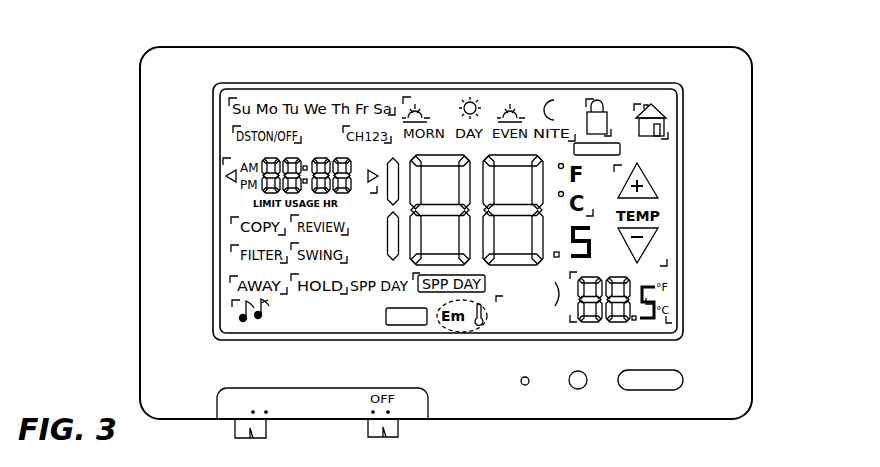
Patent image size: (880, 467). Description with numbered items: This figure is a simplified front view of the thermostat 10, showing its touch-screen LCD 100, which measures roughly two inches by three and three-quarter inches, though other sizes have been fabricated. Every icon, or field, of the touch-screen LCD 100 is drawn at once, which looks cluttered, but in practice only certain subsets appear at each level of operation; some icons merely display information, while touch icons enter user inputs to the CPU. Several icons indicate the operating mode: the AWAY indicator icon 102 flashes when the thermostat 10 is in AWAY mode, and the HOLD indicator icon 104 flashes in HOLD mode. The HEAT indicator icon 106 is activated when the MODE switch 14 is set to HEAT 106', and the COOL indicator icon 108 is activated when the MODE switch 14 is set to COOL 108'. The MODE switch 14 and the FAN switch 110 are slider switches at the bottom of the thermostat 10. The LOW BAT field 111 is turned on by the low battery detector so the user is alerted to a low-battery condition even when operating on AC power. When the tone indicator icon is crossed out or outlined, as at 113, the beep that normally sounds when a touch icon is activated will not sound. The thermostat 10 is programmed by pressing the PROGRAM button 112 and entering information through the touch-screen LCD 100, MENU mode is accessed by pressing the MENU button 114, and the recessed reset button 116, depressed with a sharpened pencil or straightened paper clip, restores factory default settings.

The thermostat 10 is at (676, 33).
The touch-screen LCD 100 is at (610, 98).
The LOW BAT field 111 is at (620, 149).
The crossed-out or outlined tone indicator icon 113 is at (262, 320).
The HOLD indicator icon 104 is at (362, 332).
The AWAY indicator icon 102 is at (400, 330).
The HEAT indicator icon 106 is at (518, 331).
The COOL indicator icon 108 is at (532, 343).
The FAN switch 110 is at (235, 432).
The HEAT setting 106' is at (329, 429).
The MODE switch 14 is at (368, 434).
The COOL setting 108' is at (434, 430).
The reset button 116 is at (522, 386).
The MENU button 114 is at (578, 389).
The PROGRAM button 112 is at (648, 390).